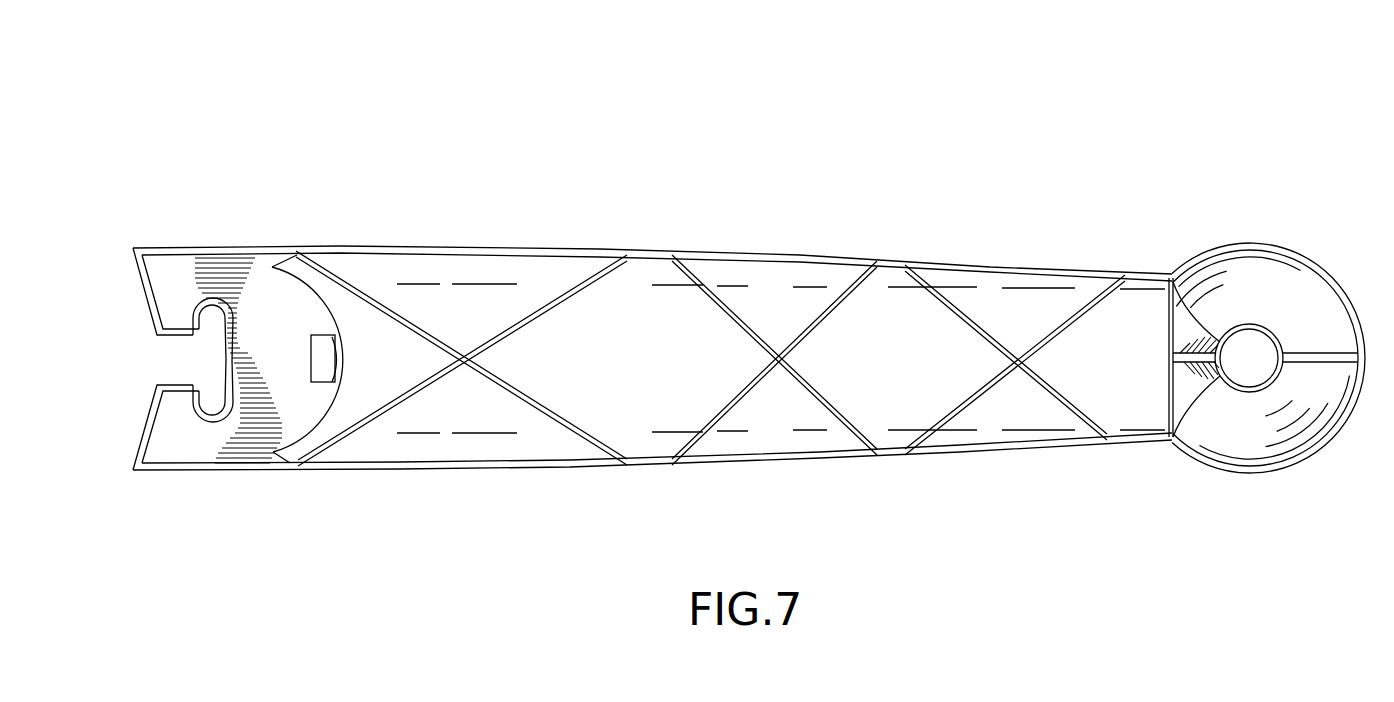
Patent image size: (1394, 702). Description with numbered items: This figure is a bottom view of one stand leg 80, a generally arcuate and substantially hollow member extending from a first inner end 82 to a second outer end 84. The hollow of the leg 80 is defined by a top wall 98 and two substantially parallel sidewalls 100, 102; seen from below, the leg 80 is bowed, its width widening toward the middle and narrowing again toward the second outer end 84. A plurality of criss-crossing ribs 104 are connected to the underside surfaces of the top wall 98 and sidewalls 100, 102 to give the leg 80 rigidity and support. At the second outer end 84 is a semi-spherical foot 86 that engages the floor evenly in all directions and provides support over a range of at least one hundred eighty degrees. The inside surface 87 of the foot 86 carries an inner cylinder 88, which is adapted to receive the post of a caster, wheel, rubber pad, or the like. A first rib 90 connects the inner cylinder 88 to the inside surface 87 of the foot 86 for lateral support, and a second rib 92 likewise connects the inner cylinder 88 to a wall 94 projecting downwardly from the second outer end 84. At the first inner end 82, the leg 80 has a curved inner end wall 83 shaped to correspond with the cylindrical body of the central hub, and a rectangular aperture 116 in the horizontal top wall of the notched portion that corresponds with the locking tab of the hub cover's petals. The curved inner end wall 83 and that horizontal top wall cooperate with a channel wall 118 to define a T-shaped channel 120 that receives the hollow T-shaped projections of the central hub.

The leg 80 is at (726, 300).
The first inner end 82 is at (260, 295).
The curved inner end wall 83 is at (137, 266).
The second outer end 84 is at (1040, 297).
The foot 86 is at (1333, 262).
The inside surface 87 is at (1329, 328).
The inner cylinder 88 is at (1253, 323).
The first rib 90 is at (1335, 370).
The second rib 92 is at (1205, 385).
The wall 94 is at (1168, 325).
The top wall 98 is at (646, 380).
The sidewall 100 is at (770, 256).
The sidewall 102 is at (623, 469).
The criss-crossing ribs 104 is at (566, 292).
The rectangular aperture 116 is at (318, 335).
The channel wall 118 is at (228, 352).
The T-shaped channel 120 is at (170, 370).